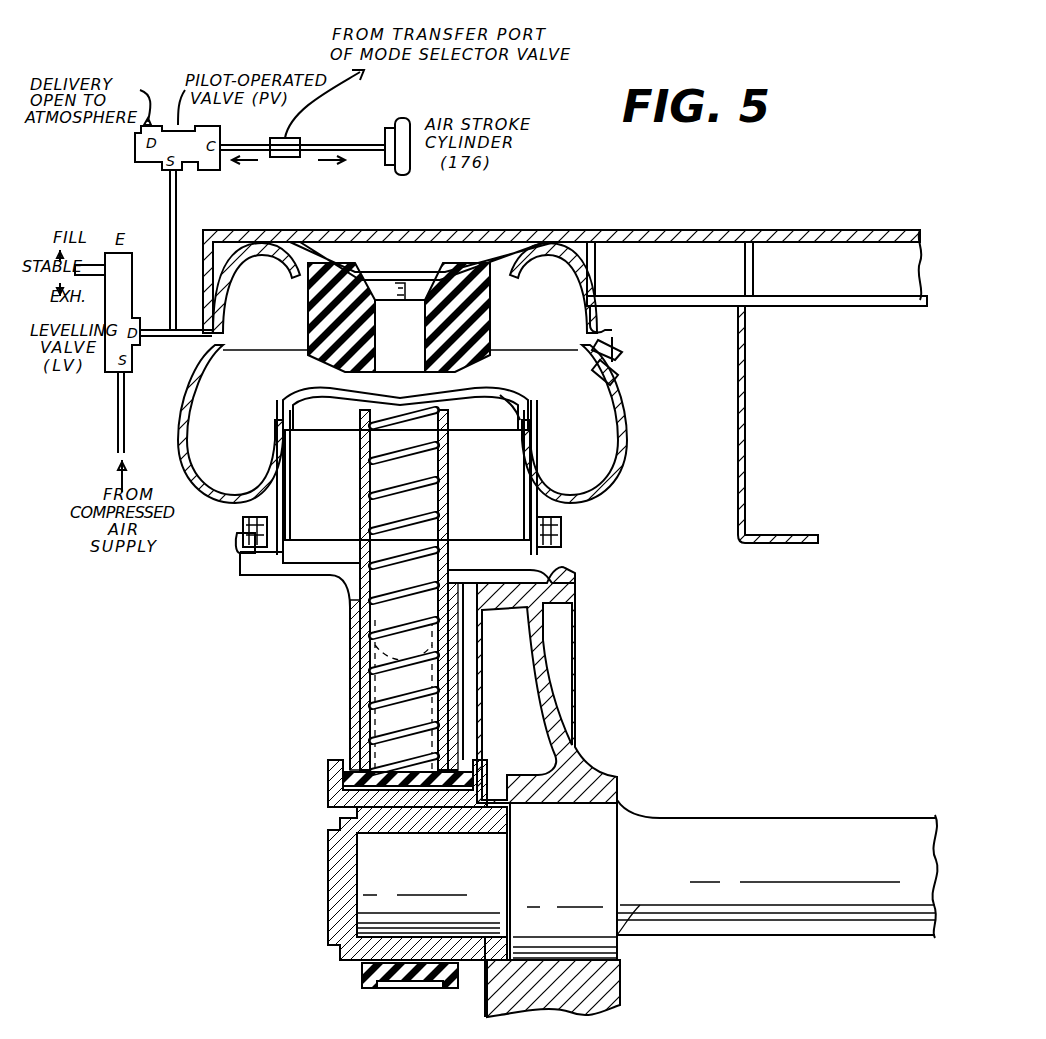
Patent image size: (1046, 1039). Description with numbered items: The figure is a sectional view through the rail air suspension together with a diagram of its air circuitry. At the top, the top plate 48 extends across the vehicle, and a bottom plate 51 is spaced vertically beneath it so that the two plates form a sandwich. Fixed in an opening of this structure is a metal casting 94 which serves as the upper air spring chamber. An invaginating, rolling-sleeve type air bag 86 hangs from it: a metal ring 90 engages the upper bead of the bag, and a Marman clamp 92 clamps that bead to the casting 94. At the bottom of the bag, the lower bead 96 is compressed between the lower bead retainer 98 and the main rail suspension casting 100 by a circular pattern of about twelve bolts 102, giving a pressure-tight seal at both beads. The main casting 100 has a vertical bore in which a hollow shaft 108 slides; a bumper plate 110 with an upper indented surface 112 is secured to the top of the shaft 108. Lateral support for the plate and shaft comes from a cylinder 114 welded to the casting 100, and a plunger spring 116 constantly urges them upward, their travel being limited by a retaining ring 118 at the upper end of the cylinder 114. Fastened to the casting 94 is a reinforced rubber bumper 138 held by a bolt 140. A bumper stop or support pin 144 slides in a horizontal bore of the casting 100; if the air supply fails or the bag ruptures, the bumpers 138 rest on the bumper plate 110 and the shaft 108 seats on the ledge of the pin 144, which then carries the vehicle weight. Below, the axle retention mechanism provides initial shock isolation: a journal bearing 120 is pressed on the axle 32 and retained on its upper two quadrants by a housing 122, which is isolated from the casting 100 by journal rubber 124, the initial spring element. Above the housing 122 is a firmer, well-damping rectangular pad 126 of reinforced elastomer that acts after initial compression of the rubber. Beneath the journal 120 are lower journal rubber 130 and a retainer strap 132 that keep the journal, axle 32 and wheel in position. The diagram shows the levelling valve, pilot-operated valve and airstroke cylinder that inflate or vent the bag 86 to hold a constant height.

The axle 32 is at (700, 818).
The top plate 48 is at (678, 232).
The bottom plate 51 is at (652, 322).
The invaginating air bag 86 is at (627, 460).
The metal ring 90 is at (614, 380).
The Marman clamp 92 is at (622, 352).
The metal casting 94 is at (530, 242).
The lower bead 96 is at (254, 518).
The lower bead retainer 98 is at (243, 535).
The main rail suspension casting 100 is at (330, 595).
The bolts 102 is at (262, 562).
The hollow shaft 108 is at (448, 519).
The bumper plate 110 is at (508, 400).
The upper indented surface 112 is at (347, 392).
The cylinder 114 is at (535, 423).
The plunger spring 116 is at (452, 481).
The retaining ring 118 is at (277, 422).
The journal bearing 120 is at (372, 948).
The housing 122 is at (328, 792).
The journal rubber 124 is at (343, 776).
The rectangular pad 126 is at (470, 753).
The lower journal rubber 130 is at (366, 990).
The retainer strap 132 is at (410, 992).
The reinforced rubber bumper 138 is at (497, 295).
The bolt 140 is at (401, 327).
The bumper stop or support pin 144 is at (455, 553).